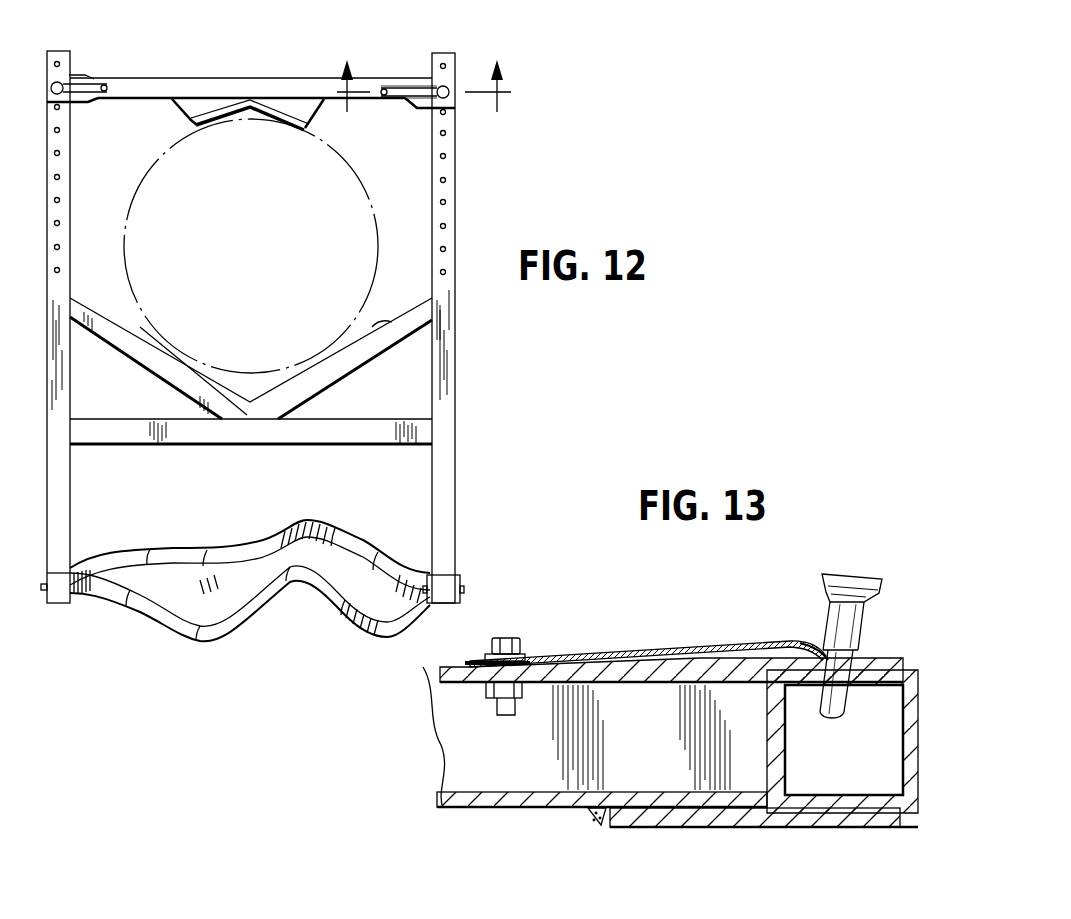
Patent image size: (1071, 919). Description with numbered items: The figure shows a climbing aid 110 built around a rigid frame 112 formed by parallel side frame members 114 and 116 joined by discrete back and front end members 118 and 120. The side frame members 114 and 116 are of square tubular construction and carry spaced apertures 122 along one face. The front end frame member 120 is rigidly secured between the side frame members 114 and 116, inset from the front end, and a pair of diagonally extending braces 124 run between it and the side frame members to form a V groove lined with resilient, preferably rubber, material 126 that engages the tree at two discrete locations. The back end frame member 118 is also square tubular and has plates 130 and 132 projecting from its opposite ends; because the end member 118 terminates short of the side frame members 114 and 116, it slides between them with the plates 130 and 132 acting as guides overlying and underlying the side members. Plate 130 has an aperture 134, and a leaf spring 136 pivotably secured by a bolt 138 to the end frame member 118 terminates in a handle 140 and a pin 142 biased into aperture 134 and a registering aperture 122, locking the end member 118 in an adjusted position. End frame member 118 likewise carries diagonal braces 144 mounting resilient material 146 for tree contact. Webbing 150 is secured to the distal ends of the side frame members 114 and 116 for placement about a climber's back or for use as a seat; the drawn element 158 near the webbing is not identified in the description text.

In FIG. 12, the climbing aid 110 is at (473, 421).
In FIG. 12, the rigid frame 112 is at (456, 353).
In FIG. 12, the side frame member 114 is at (457, 541).
In FIG. 12, the side frame member 116 is at (68, 486).
In FIG. 12, the back end frame member 118 is at (142, 88).
In FIG. 13, the back end frame member 118 is at (449, 760).
In FIG. 12, the front end frame member 120 is at (127, 444).
In FIG. 12, the apertures 122 is at (449, 161).
In FIG. 12, the diagonally extending braces 124 is at (338, 375).
In FIG. 12, the resilient material 126 is at (123, 330).
In FIG. 12, the plate 130 is at (86, 75).
In FIG. 13, the plate 130 is at (688, 660).
In FIG. 13, the plate 132 is at (593, 817).
In FIG. 13, the aperture 134 is at (822, 652).
In FIG. 12, the leaf spring 136 is at (396, 93).
In FIG. 13, the leaf spring 136 is at (607, 652).
In FIG. 13, the bolt 138 is at (489, 655).
In FIG. 13, the handle 140 is at (841, 573).
In FIG. 13, the pin 142 is at (842, 716).
In FIG. 12, the diagonally extending braces 144 is at (312, 103).
In FIG. 12, the resilient material 146 is at (272, 120).
In FIG. 12, the webbing 150 is at (85, 105).
In FIG. 12, the flexible strap 158 is at (175, 613).